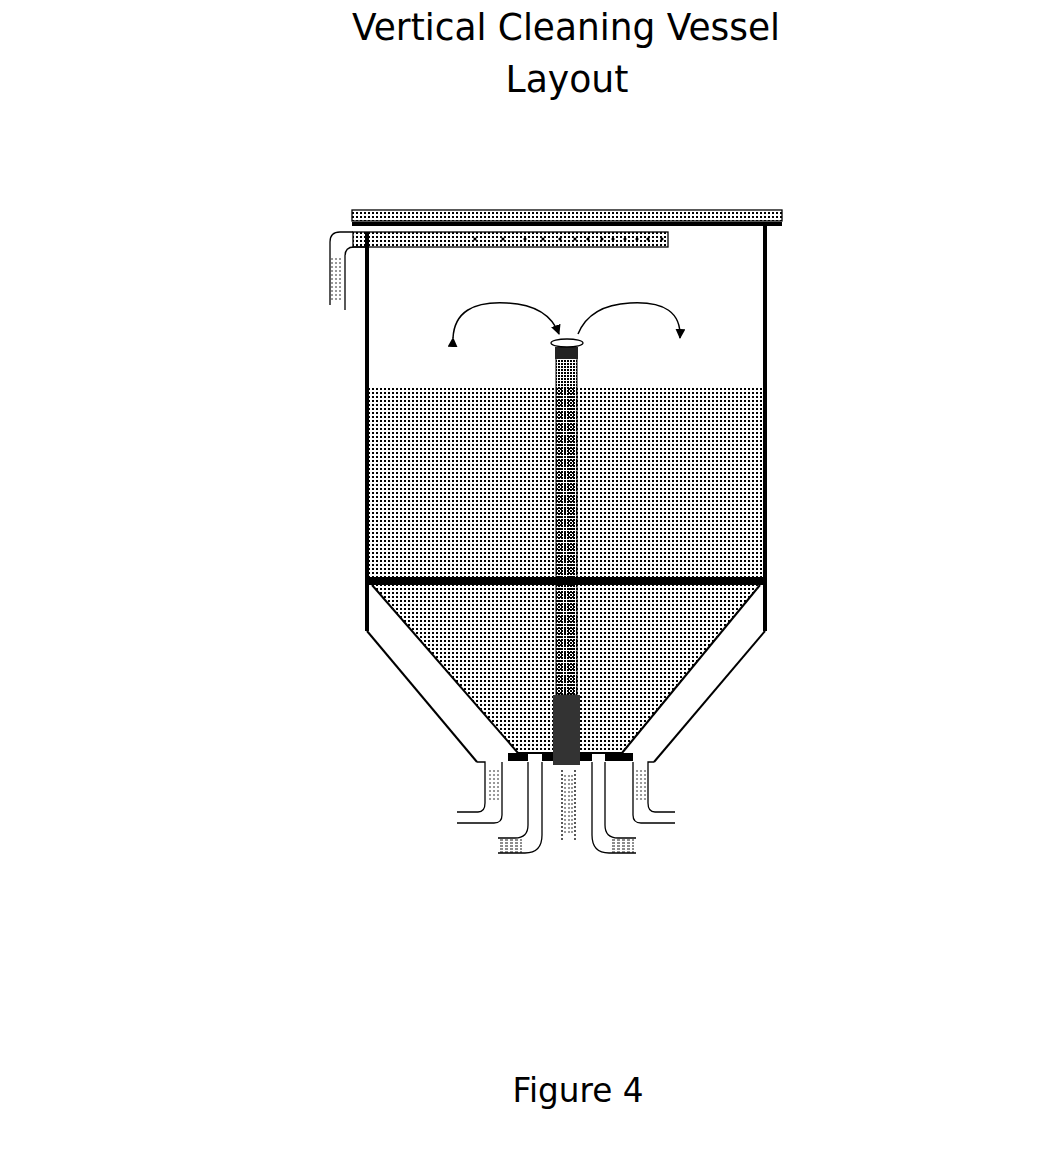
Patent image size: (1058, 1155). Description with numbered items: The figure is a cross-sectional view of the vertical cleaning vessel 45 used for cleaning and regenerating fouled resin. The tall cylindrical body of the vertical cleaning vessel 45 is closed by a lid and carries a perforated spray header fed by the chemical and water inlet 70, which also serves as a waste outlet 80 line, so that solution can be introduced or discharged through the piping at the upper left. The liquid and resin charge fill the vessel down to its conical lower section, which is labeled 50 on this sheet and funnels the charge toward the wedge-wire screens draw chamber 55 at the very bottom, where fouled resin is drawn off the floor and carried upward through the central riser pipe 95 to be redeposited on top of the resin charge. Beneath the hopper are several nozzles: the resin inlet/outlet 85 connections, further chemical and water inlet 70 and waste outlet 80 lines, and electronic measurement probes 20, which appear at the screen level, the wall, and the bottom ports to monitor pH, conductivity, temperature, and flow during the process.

The electronic measurement probes 20 is at (330, 297).
The vertical cleaning vessel 45 is at (767, 310).
The horizontal cleaning vessel 50 is at (470, 697).
The wedge-wire screens draw chamber 55 is at (570, 724).
The chemical and water inlet 70 is at (474, 540).
The waste outlet 80 is at (333, 245).
The resin inlet/outlet 85 is at (533, 822).
The central riser pipe 95 is at (568, 403).